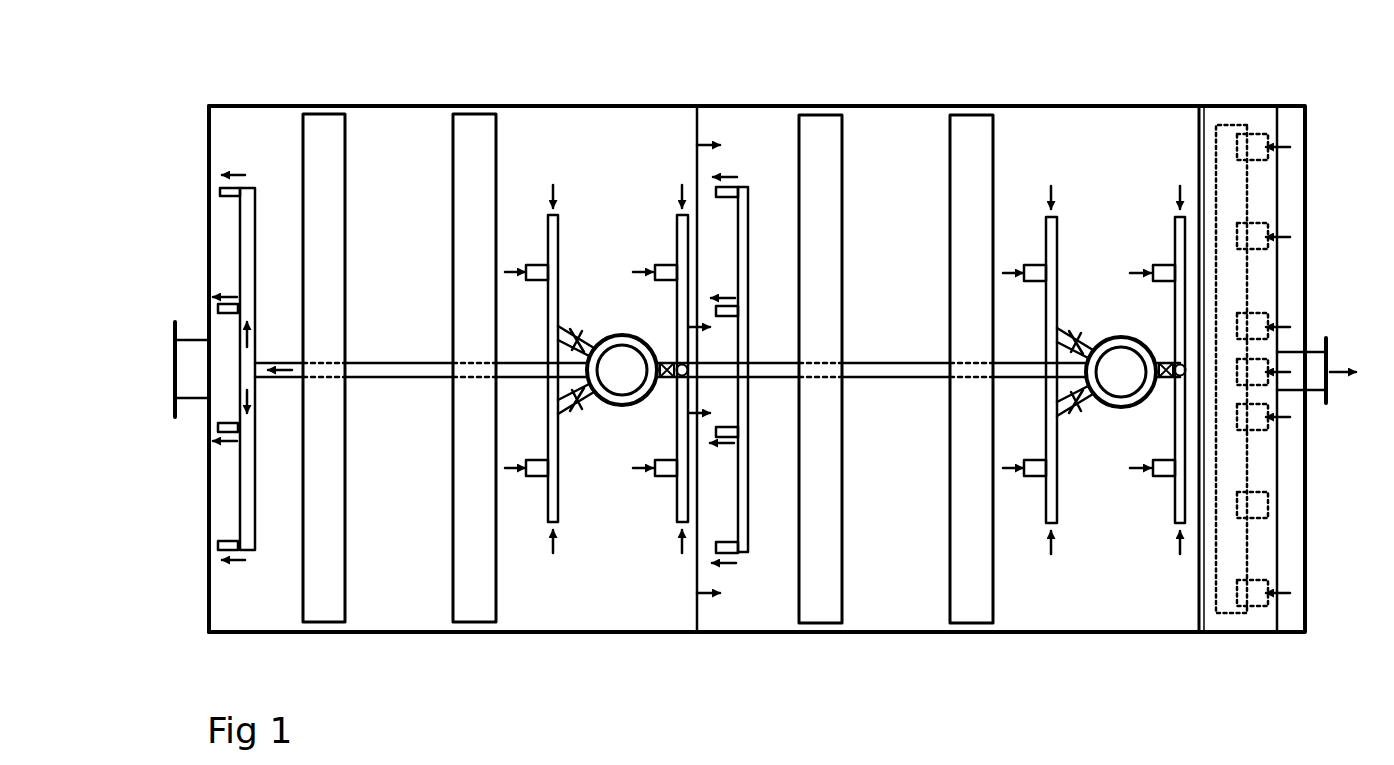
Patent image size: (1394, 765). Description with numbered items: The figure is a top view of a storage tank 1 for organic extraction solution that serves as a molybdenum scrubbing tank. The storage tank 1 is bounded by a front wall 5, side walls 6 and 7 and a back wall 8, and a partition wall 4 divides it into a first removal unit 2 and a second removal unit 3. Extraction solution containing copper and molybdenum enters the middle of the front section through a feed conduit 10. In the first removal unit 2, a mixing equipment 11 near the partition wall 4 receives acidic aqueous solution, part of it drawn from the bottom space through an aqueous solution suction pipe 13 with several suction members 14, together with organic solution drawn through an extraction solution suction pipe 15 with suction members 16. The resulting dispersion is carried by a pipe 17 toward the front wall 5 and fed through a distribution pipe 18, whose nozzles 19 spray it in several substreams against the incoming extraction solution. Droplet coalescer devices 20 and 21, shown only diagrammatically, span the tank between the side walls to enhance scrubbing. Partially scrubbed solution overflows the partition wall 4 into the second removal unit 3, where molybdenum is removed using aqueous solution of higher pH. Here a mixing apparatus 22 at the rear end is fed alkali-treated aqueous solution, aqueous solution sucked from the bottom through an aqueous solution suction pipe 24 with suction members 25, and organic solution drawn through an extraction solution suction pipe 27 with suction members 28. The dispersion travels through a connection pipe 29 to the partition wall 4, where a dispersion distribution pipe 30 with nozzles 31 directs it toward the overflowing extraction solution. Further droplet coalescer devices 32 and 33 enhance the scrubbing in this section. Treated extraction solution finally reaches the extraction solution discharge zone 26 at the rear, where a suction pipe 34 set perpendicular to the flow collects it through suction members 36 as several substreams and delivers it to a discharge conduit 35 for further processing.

The storage tank 1 is at (614, 56).
The first removal unit 2 is at (520, 585).
The second removal unit 3 is at (1054, 625).
The partition wall 4 is at (700, 636).
The front wall 5 is at (208, 512).
The side wall 6 is at (362, 634).
The side wall 7 is at (892, 104).
The back wall 8 is at (1305, 252).
The feed conduit 10 is at (188, 363).
The mixing equipment 11 is at (612, 406).
The aqueous solution suction pipe 13 is at (677, 518).
The suction members 14 is at (667, 265).
The extraction solution suction pipe 15 is at (558, 480).
The suction members 16 is at (534, 462).
The pipe 17 is at (378, 366).
The distribution pipe 18 is at (255, 527).
The nozzles 19 is at (237, 560).
The droplet coalescer device 20 is at (346, 228).
The droplet coalescer device 21 is at (452, 178).
The mixing apparatus 22 is at (1118, 340).
The aqueous solution suction pipe 24 is at (1177, 524).
The suction members 25 is at (1163, 472).
The extraction solution discharge zone 26 is at (1290, 546).
The extraction solution suction pipe 27 is at (1058, 489).
The suction members 28 is at (1038, 478).
The connection pipe 29 is at (909, 380).
The dispersion distribution pipe 30 is at (745, 367).
The nozzles 31 is at (738, 313).
The droplet coalescer device 32 is at (843, 517).
The droplet coalescer device 33 is at (947, 537).
The suction pipe 34 is at (1230, 472).
The discharge conduit 35 is at (1318, 360).
The suction members 36 is at (1258, 590).